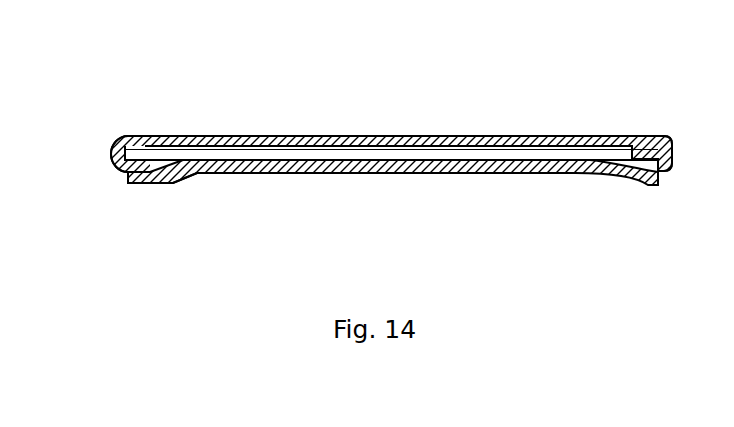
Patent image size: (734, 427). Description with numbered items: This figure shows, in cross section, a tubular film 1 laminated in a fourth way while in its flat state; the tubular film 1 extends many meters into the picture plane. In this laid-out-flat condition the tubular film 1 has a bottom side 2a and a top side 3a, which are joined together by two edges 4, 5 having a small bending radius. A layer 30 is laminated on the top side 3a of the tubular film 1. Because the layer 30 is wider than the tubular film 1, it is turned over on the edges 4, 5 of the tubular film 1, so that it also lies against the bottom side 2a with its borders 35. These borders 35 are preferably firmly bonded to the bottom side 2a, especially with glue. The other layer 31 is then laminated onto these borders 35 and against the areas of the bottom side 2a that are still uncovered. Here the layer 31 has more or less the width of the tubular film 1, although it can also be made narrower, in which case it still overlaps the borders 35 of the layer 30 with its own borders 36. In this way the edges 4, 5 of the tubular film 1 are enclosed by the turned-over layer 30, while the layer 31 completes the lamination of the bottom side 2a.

The tubular film 1 is at (155, 138).
The bottom side 2a is at (293, 197).
The top side 3a is at (294, 109).
The edge 4 is at (112, 154).
The edge 5 is at (672, 157).
The layer 30 is at (398, 137).
The layer 31 is at (472, 173).
The borders 35 is at (137, 137).
The borders 36 is at (138, 185).